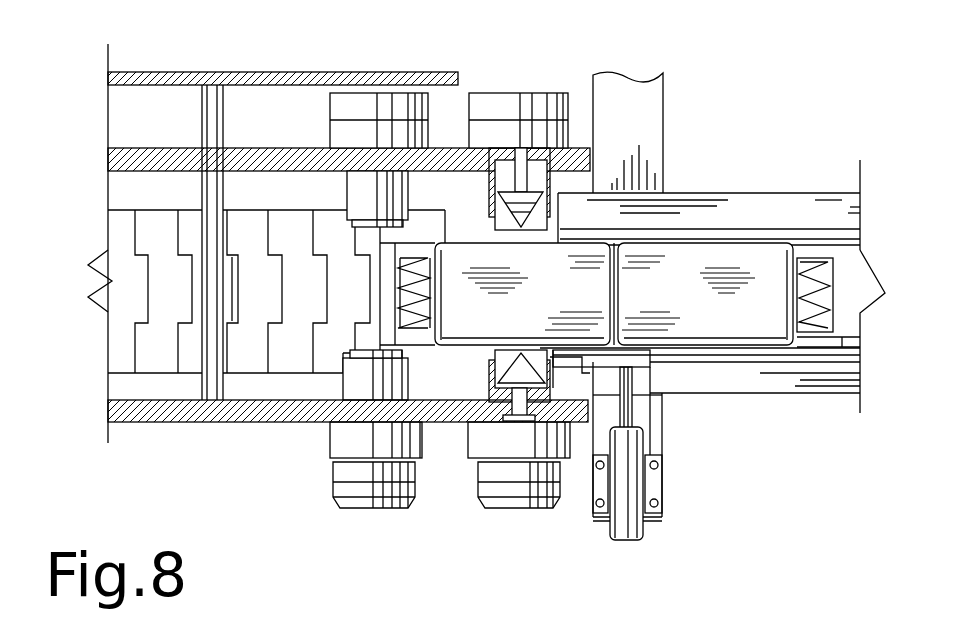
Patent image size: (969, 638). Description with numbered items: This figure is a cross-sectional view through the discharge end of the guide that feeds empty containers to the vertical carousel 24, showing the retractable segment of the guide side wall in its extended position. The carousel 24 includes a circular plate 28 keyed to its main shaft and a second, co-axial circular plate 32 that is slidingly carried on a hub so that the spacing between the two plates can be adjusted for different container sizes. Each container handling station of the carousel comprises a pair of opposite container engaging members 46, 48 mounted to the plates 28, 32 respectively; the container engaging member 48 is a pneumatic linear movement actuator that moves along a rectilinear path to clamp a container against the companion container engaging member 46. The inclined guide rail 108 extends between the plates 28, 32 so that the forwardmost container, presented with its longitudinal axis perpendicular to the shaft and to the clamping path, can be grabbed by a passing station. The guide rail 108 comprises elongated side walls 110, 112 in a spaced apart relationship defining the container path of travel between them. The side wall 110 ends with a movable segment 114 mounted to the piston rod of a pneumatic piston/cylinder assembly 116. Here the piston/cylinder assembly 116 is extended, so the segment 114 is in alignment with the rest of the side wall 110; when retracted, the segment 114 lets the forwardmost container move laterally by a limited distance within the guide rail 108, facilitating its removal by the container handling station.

The vertical carousel 24 is at (170, 143).
The circular plate 28 is at (283, 417).
The circular plate 32 is at (583, 157).
The container engaging member 46 is at (483, 445).
The container engaging member 48 is at (527, 103).
The inclined guide rail 108 is at (761, 186).
The elongated side wall 110 is at (755, 380).
The elongated side wall 112 is at (827, 203).
The movable segment 114 is at (640, 370).
The pneumatic piston/cylinder assembly 116 is at (647, 520).